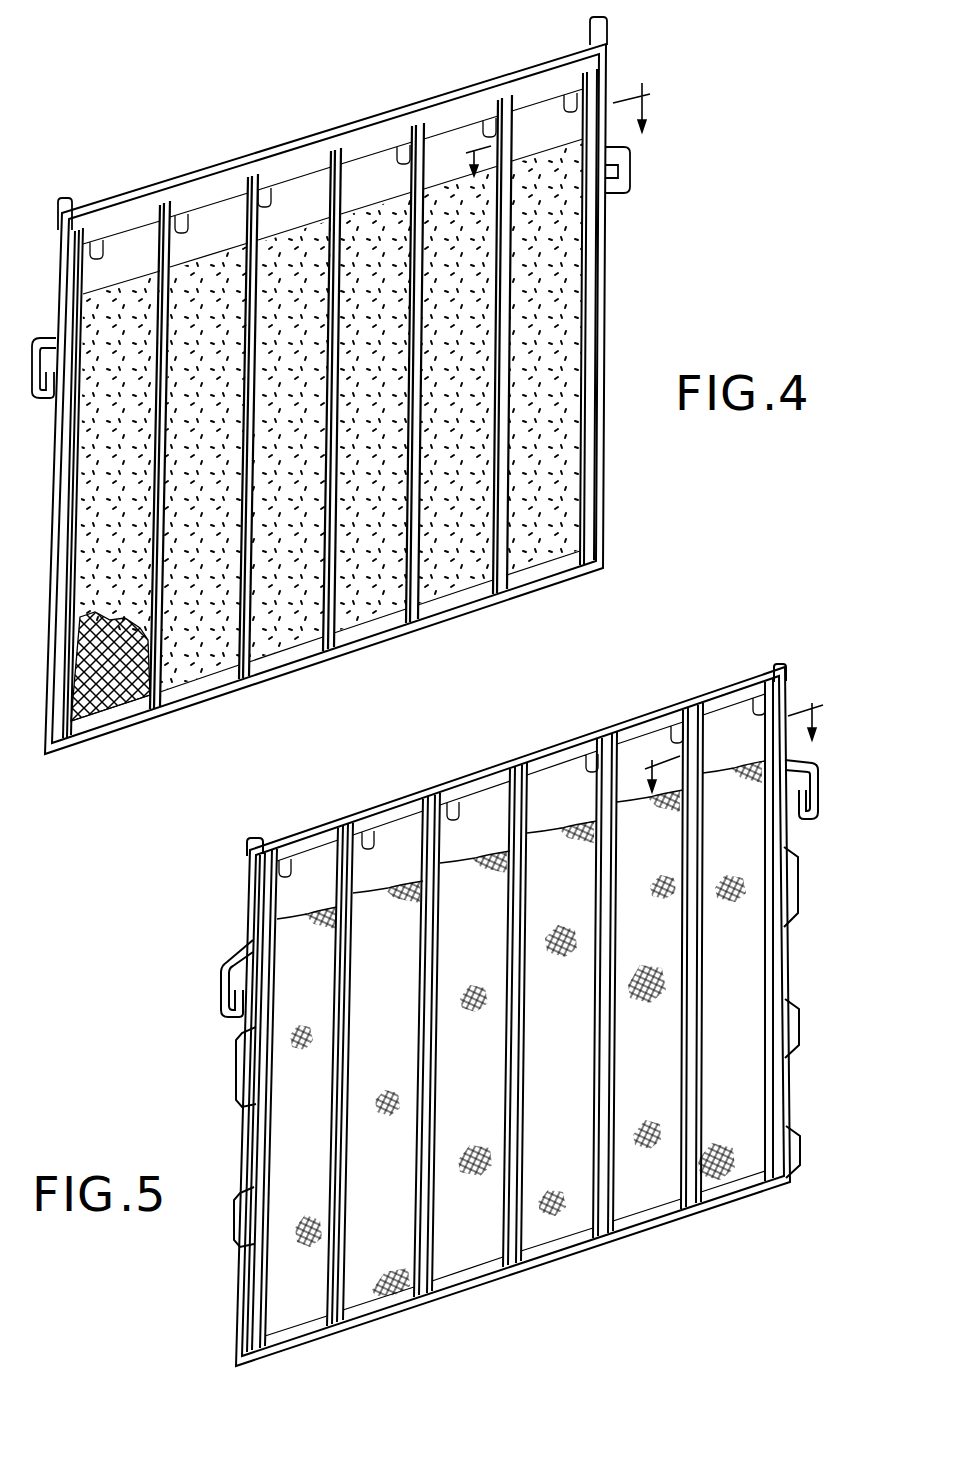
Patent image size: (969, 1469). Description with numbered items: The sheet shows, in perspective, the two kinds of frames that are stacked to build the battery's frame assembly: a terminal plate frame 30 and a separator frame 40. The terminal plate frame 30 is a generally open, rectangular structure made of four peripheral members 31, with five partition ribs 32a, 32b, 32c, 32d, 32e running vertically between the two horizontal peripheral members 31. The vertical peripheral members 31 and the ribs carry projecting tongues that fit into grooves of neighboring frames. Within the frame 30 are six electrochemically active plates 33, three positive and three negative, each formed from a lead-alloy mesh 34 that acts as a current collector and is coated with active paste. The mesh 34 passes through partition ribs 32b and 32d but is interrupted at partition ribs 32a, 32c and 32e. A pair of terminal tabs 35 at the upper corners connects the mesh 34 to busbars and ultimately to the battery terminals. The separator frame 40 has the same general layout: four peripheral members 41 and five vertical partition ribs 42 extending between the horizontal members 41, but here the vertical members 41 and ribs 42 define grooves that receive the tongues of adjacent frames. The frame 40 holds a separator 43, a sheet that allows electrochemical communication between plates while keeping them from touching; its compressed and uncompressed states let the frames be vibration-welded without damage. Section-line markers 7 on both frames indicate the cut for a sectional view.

In FIG. 4, the terminal plate frame 30 is at (668, 222).
In FIG. 4, the peripheral members 31 is at (603, 296).
In FIG. 4, the partition rib 32a is at (163, 702).
In FIG. 4, the partition rib 32b is at (257, 661).
In FIG. 4, the partition rib 32c is at (333, 633).
In FIG. 4, the partition rib 32d is at (420, 604).
In FIG. 4, the partition rib 32e is at (510, 578).
In FIG. 4, the electrochemically active plates 33 is at (560, 506).
In FIG. 4, the lead-alloy mesh 34 is at (107, 712).
In FIG. 4, the terminal tabs 35 is at (72, 203).
In FIG. 4, the section line indicator 7 is at (556, 117).
In FIG. 5, the section line indicator 7 is at (732, 735).
In FIG. 5, the separator frame 40 is at (829, 895).
In FIG. 5, the peripheral members 41 is at (782, 963).
In FIG. 5, the partition ribs 42 is at (340, 1283).
In FIG. 5, the separator 43 is at (580, 1203).